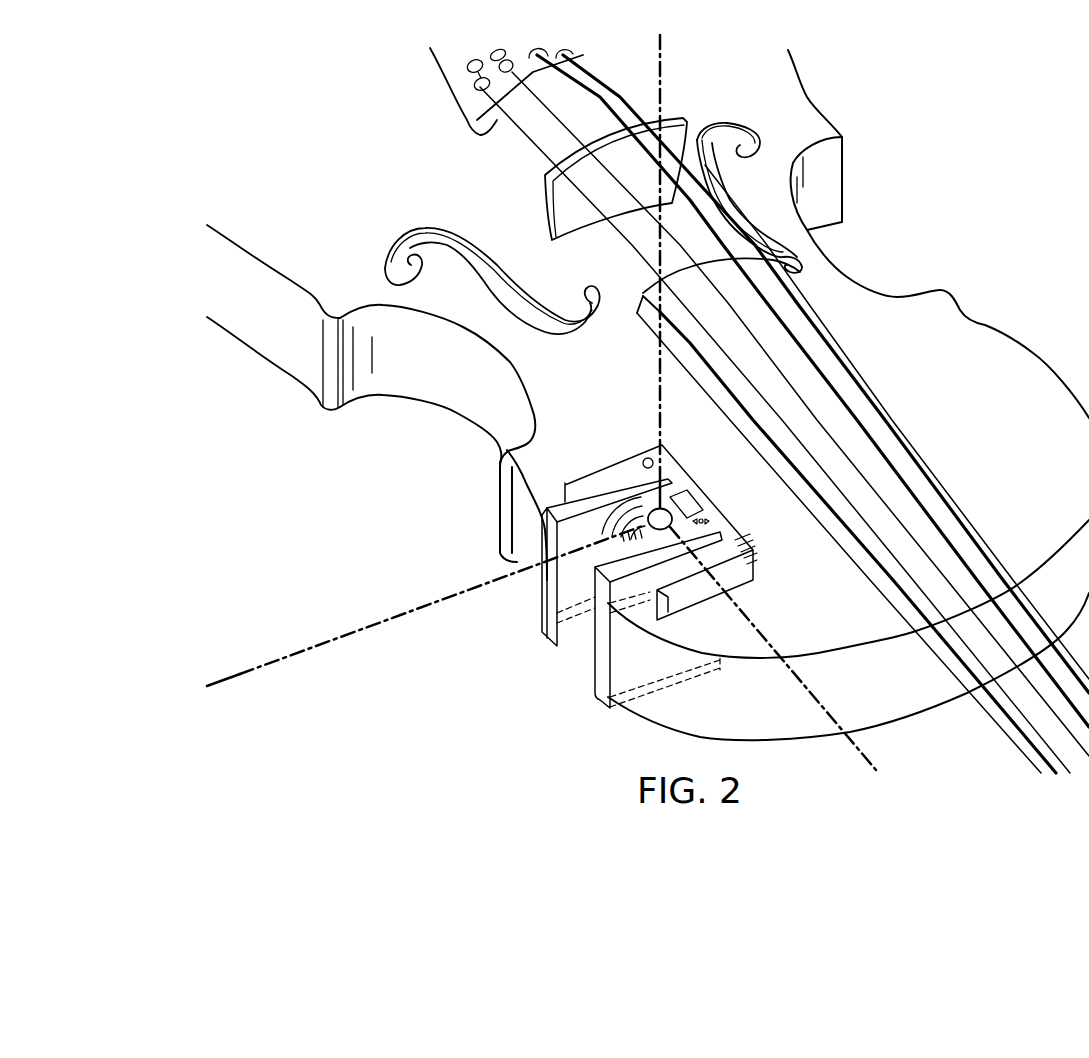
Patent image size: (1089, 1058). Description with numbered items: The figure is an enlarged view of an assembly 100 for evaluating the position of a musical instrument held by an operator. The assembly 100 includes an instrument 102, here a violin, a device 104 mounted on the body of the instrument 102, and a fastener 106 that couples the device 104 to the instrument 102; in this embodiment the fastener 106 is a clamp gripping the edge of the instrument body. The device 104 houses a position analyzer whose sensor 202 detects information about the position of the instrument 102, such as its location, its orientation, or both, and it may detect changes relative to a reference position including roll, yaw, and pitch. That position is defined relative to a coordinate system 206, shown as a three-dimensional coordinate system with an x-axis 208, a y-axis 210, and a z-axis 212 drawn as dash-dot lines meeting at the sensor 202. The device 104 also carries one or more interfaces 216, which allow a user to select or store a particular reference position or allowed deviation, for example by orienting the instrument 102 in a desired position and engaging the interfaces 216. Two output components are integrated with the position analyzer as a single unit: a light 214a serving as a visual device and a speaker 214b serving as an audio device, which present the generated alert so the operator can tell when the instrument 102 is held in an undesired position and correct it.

The assembly 100 is at (930, 220).
The instrument 102 is at (1030, 352).
The device 104 is at (757, 567).
The fastener 106 is at (550, 645).
The sensor 202 is at (673, 527).
The coordinate system 206 is at (342, 622).
The x-axis 208 is at (867, 760).
The y-axis 210 is at (663, 64).
The z-axis 212 is at (230, 688).
The light 214a is at (646, 458).
The speaker 214b is at (632, 513).
The interfaces 216 is at (691, 497).